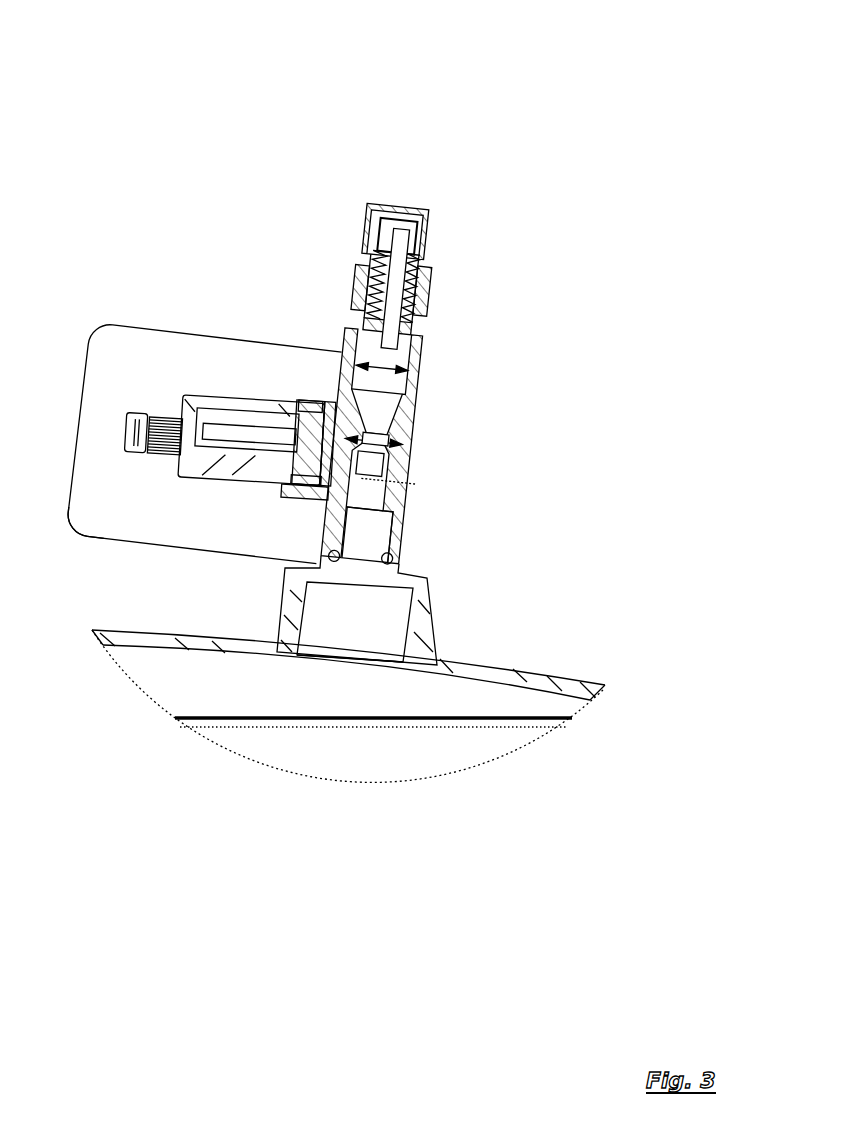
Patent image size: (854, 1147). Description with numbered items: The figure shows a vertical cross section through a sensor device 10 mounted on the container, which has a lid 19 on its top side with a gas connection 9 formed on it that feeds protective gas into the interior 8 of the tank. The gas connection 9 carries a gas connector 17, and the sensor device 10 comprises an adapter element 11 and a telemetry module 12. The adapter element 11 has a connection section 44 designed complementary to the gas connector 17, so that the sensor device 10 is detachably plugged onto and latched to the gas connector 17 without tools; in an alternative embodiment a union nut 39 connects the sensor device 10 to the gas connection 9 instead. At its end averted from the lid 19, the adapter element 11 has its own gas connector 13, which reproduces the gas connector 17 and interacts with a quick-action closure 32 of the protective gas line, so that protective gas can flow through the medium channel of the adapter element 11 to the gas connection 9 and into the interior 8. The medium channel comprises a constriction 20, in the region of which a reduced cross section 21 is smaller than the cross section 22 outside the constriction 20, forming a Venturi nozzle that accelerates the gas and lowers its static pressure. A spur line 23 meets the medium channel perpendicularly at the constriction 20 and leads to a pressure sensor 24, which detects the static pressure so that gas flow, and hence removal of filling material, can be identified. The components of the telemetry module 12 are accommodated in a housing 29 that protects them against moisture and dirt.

The interior 8 is at (267, 693).
The gas connection 9 is at (422, 614).
The sensor device 10 is at (237, 217).
The adapter element 11 is at (377, 393).
The telemetry module 12 is at (124, 308).
The gas connector 13 is at (391, 286).
The gas connector 17 is at (360, 557).
The lid 19 is at (540, 688).
The constriction 20 is at (386, 467).
The cross section 21 is at (374, 441).
The cross section 22 is at (382, 367).
The spur line 23 is at (374, 418).
The pressure sensor 24 is at (308, 445).
The housing 29 is at (91, 506).
The quick-action closure 32 is at (391, 269).
The union nut 39 is at (355, 657).
The connection section 44 is at (367, 535).